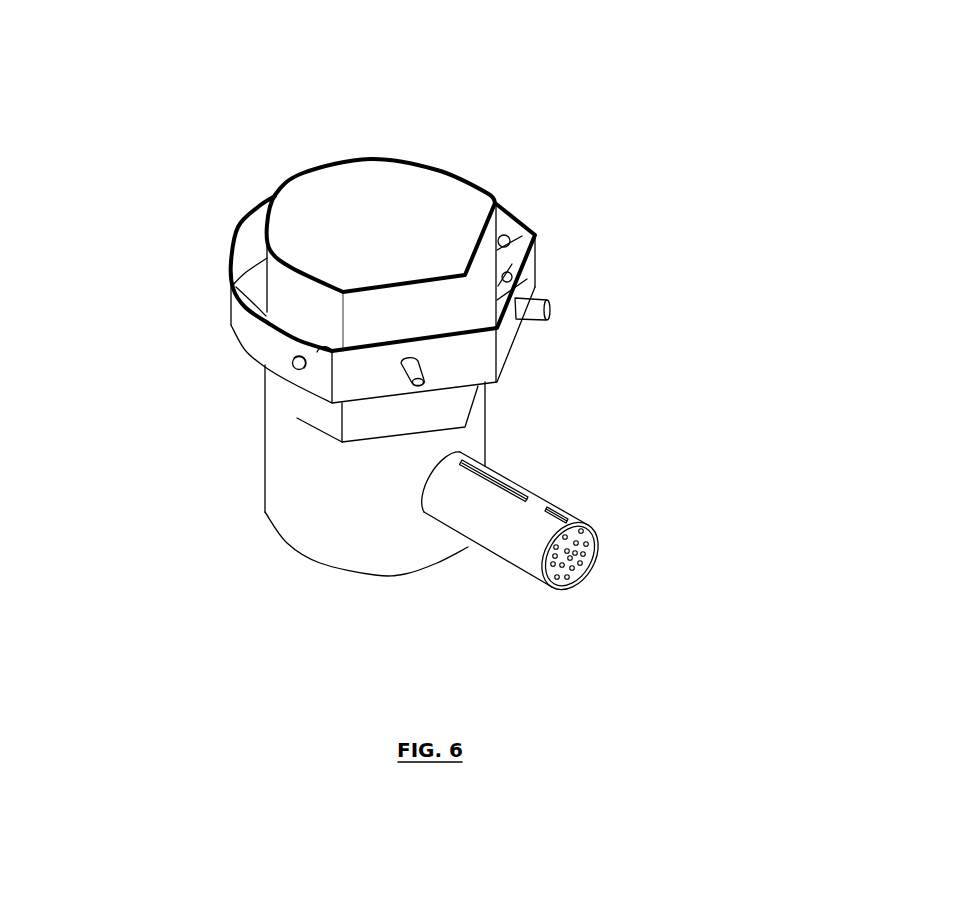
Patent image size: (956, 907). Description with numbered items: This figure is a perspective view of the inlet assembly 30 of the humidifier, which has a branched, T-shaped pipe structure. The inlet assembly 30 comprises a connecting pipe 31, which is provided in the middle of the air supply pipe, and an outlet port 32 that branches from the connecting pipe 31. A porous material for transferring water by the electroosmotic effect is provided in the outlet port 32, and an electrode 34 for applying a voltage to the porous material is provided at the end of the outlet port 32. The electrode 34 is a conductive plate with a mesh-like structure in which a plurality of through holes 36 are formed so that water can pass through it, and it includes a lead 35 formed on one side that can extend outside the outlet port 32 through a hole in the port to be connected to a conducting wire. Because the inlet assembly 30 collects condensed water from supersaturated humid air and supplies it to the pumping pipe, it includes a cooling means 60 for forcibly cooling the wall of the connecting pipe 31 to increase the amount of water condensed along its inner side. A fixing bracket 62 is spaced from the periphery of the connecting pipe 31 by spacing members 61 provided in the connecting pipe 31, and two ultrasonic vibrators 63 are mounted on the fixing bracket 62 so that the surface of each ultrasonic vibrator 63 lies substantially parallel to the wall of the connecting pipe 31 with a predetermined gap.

The inlet assembly 30 is at (484, 162).
The connecting pipe 31 is at (262, 413).
The outlet port 32 is at (497, 567).
The electrode 34 is at (588, 537).
The lead 35 is at (520, 485).
The through holes 36 is at (582, 562).
The cooling means 60 is at (226, 295).
The spacing members 61 is at (530, 233).
The fixing bracket 62 is at (240, 240).
The ultrasonic vibrator 63 is at (525, 270).